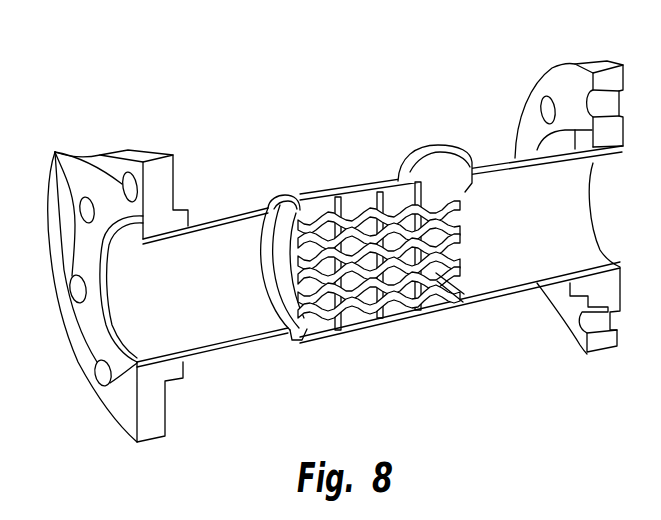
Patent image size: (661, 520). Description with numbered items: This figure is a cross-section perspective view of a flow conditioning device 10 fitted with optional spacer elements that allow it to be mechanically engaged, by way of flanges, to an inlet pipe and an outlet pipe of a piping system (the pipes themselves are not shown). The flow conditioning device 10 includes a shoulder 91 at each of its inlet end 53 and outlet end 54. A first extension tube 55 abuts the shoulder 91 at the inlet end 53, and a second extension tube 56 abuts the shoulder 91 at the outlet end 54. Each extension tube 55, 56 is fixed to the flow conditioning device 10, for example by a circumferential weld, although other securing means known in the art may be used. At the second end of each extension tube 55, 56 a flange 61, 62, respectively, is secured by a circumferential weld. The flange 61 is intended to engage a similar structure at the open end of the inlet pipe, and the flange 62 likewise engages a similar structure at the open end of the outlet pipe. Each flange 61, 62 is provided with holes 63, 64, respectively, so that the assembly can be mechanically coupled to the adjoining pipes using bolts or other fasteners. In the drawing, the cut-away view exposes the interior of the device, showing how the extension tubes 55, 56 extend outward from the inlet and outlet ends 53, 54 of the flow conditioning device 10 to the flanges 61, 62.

The flow conditioning device 10 is at (470, 132).
The inlet end 53 is at (268, 203).
The outlet end 54 is at (471, 152).
The first extension tube 55 is at (228, 343).
The second extension tube 56 is at (522, 296).
The flange 61 is at (143, 150).
The flange 62 is at (578, 63).
The holes 63 is at (55, 152).
The holes 64 is at (540, 100).
The shoulder 91 is at (452, 300).